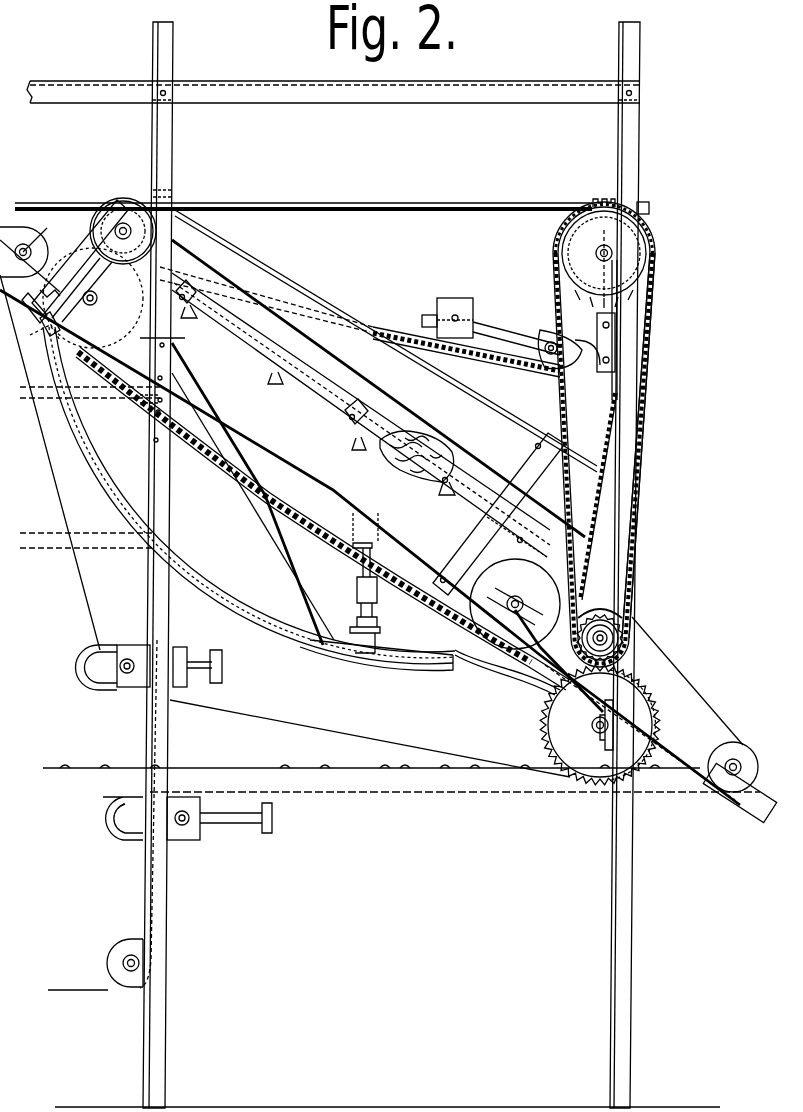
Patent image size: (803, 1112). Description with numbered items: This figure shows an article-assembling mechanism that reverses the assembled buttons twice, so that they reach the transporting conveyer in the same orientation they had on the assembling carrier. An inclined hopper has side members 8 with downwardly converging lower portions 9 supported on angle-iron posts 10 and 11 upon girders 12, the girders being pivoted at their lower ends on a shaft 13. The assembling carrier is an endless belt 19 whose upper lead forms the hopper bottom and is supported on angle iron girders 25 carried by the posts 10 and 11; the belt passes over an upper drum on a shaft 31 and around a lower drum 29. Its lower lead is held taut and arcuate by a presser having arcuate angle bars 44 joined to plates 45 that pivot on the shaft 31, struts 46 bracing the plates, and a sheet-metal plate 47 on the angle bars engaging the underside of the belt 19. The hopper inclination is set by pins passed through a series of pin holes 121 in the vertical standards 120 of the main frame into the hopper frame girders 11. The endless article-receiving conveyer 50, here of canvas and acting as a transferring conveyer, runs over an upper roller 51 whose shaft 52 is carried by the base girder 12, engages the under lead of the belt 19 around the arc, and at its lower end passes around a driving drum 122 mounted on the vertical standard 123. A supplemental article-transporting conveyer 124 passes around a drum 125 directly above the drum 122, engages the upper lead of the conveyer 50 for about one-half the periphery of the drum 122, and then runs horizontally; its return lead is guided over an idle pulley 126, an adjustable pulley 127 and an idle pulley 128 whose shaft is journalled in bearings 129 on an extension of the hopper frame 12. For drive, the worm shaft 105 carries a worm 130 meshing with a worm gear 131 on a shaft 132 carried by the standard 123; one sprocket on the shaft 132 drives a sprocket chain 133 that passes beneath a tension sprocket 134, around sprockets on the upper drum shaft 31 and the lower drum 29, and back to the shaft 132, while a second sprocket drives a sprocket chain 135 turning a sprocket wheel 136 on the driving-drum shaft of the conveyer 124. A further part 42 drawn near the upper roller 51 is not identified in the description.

The side member 8 is at (450, 400).
The downwardly converging lower portion 9 is at (395, 418).
The post 10 is at (492, 440).
The post 11 is at (118, 196).
The girder 12 is at (282, 463).
The shaft 13 is at (623, 716).
The endless belt 19 is at (400, 462).
The angle iron girder 25 is at (244, 344).
The lower drum 29 is at (495, 568).
The shaft 31 is at (97, 286).
The tilted bar 42 is at (62, 252).
The arcuate angle bar 44 is at (172, 555).
The plate 45 is at (100, 315).
The strut 46 is at (232, 496).
The plate of sheet metal 47 is at (205, 580).
The article-receiving conveyer 50 is at (76, 578).
The upper roller 51 is at (12, 237).
The shaft 52 is at (41, 229).
The worm shaft 105 is at (305, 203).
The vertical standard 120 is at (163, 922).
The pin hole 121 is at (158, 412).
The driving drum 122 is at (578, 762).
The vertical standard 123 is at (626, 918).
The supplemental article-transporting conveyer 124 is at (662, 662).
The drum 125 is at (595, 618).
The idle pulley 126 is at (125, 948).
The adjustable pulley 127 is at (183, 798).
The idle pulley 128 is at (750, 755).
The bearing 129 is at (737, 782).
The worm 130 is at (600, 198).
The worm gear 131 is at (642, 216).
The shaft 132 is at (609, 253).
The sprocket chain 133 is at (395, 330).
The tension sprocket 134 is at (548, 330).
The sprocket chain 135 is at (648, 340).
The sprocket wheel 136 is at (613, 623).